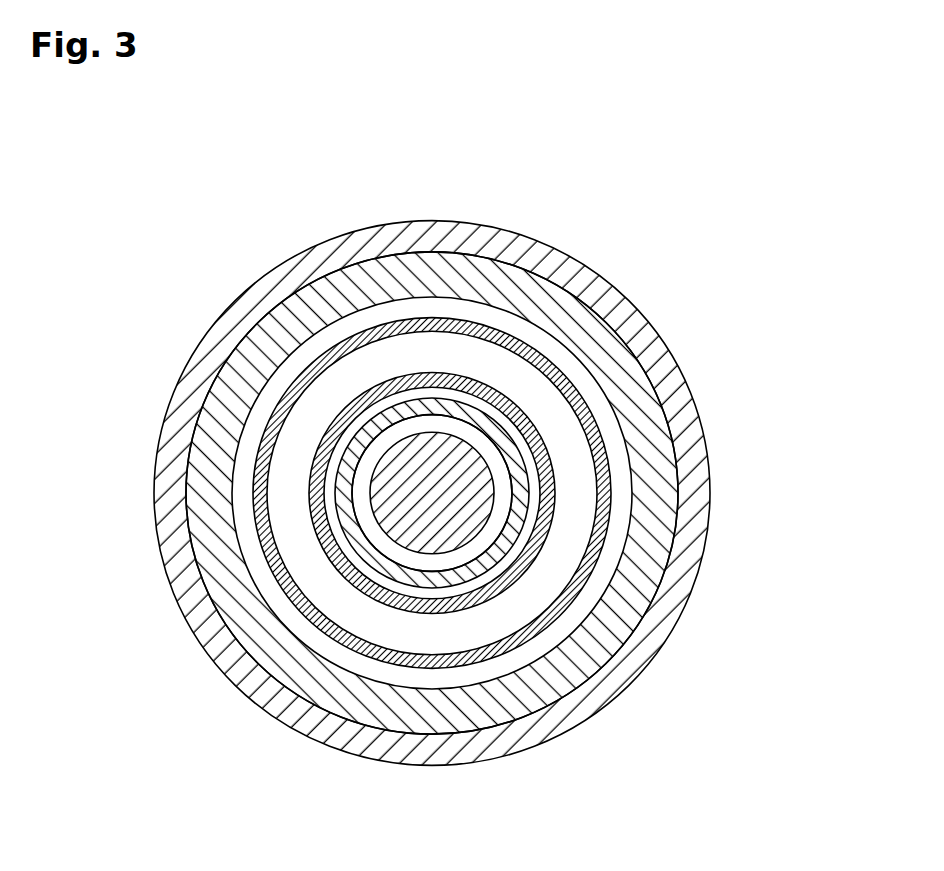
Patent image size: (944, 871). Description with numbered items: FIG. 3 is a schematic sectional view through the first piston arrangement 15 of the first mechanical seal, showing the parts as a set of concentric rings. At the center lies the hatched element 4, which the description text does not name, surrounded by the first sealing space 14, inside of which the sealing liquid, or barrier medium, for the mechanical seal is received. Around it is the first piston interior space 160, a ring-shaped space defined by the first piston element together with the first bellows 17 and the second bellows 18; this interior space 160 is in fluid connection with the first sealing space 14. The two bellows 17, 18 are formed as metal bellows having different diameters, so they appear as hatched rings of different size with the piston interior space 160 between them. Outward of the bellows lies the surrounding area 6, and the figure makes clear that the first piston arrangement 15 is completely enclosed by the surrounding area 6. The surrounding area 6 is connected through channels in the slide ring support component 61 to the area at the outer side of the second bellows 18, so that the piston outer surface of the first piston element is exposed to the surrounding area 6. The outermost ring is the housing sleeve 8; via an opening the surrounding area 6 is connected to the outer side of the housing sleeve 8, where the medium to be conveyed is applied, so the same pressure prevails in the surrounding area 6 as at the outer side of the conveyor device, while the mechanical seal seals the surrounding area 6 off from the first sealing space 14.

The shaft 4 is at (472, 500).
The surrounding area 6 is at (532, 465).
The housing sleeve 8 is at (176, 539).
The first sealing space 14 is at (418, 428).
The first piston arrangement 15 is at (568, 662).
The first piston interior space 160 is at (347, 610).
The first bellows 17 is at (407, 607).
The second bellows 18 is at (458, 658).
The slide ring support component 61 is at (373, 423).